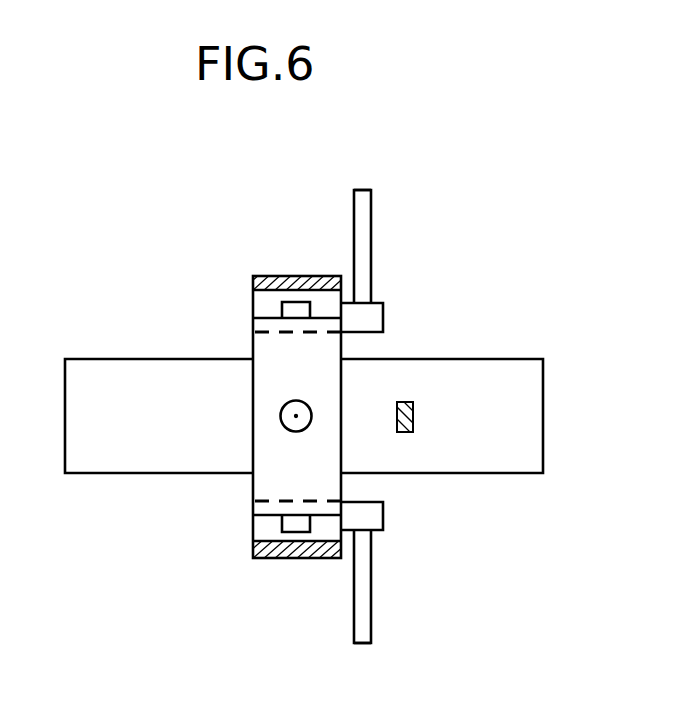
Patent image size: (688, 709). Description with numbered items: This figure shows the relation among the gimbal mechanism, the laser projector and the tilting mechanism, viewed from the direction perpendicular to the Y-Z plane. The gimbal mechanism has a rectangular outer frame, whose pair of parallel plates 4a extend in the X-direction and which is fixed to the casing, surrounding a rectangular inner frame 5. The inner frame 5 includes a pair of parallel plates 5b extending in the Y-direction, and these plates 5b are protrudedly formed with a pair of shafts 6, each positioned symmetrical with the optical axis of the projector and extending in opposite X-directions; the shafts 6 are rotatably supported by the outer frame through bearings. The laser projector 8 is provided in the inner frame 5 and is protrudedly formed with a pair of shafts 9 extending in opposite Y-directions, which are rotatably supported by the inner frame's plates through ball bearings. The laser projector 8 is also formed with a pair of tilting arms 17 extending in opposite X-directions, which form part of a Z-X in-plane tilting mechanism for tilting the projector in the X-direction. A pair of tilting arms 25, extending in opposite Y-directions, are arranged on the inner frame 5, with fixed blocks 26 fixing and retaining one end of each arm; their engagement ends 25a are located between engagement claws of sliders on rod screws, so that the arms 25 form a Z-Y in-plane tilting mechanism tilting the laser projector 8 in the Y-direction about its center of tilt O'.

The parallel plates 4a is at (308, 277).
The inner frame 5 is at (270, 360).
The parallel plates 5b is at (253, 328).
The shafts 6 is at (284, 426).
The laser projector 8 is at (497, 448).
The shafts 9 is at (292, 310).
The tilting arms 17 is at (408, 402).
The tilting arms 25 is at (363, 228).
The engagement ends 25a is at (360, 190).
The fixed blocks 26 is at (380, 320).
The center of tilt O' is at (215, 368).